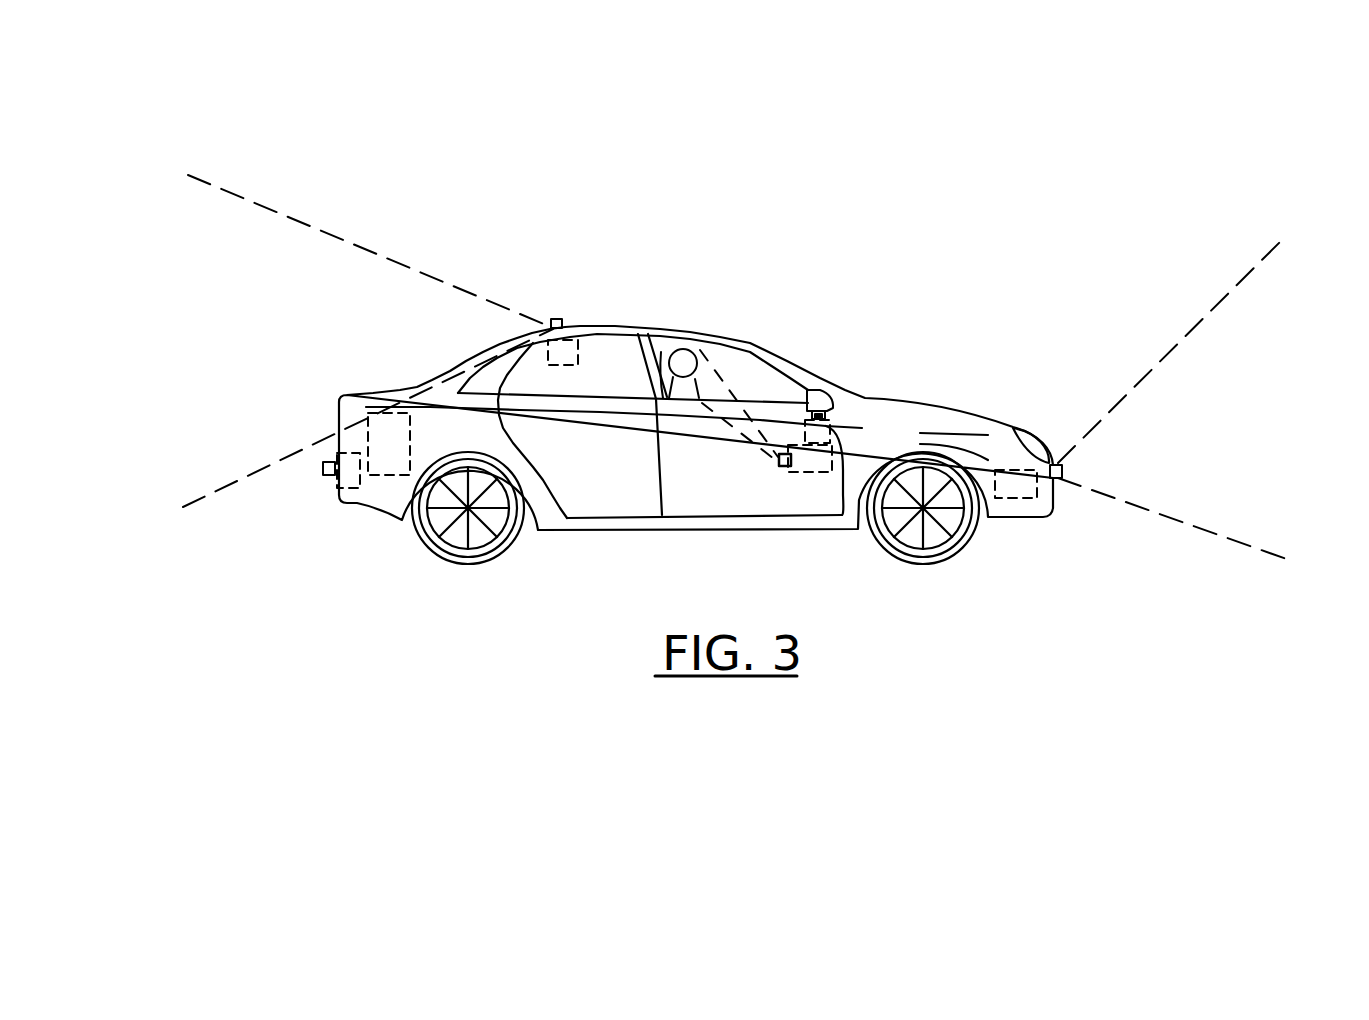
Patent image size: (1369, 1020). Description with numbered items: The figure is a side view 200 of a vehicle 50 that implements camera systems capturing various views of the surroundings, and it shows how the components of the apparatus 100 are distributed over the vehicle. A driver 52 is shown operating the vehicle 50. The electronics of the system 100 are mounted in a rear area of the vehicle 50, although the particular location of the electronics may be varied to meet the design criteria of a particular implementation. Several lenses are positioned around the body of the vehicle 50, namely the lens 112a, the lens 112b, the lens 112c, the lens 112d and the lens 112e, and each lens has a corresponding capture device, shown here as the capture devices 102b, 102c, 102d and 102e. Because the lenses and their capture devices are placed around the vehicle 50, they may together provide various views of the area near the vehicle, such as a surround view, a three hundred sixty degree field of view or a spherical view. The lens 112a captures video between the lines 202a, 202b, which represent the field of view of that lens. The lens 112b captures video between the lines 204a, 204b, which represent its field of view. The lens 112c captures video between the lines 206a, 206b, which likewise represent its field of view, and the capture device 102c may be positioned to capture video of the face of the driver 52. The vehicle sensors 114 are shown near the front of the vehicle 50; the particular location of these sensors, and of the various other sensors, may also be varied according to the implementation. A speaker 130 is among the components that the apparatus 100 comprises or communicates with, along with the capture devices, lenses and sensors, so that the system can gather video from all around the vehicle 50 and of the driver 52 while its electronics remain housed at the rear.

The vehicle 50 is at (450, 370).
The driver 52 is at (690, 349).
The apparatus 100 is at (368, 445).
The capture device 102b is at (573, 340).
The capture device 102c is at (808, 474).
The capture device 102d is at (828, 431).
The capture device 102e is at (352, 488).
The lens 112a is at (1060, 479).
The lens 112b is at (553, 318).
The lens 112c is at (778, 466).
The lens 112d is at (835, 410).
The lens 112e is at (320, 472).
The vehicle sensors 114 is at (1014, 500).
The speaker 130 is at (818, 390).
The side view 200 is at (522, 73).
The line 202a is at (1213, 307).
The line 202b is at (1213, 530).
The line 204a is at (372, 250).
The line 204b is at (240, 479).
The line 206a is at (737, 388).
The line 206b is at (748, 436).